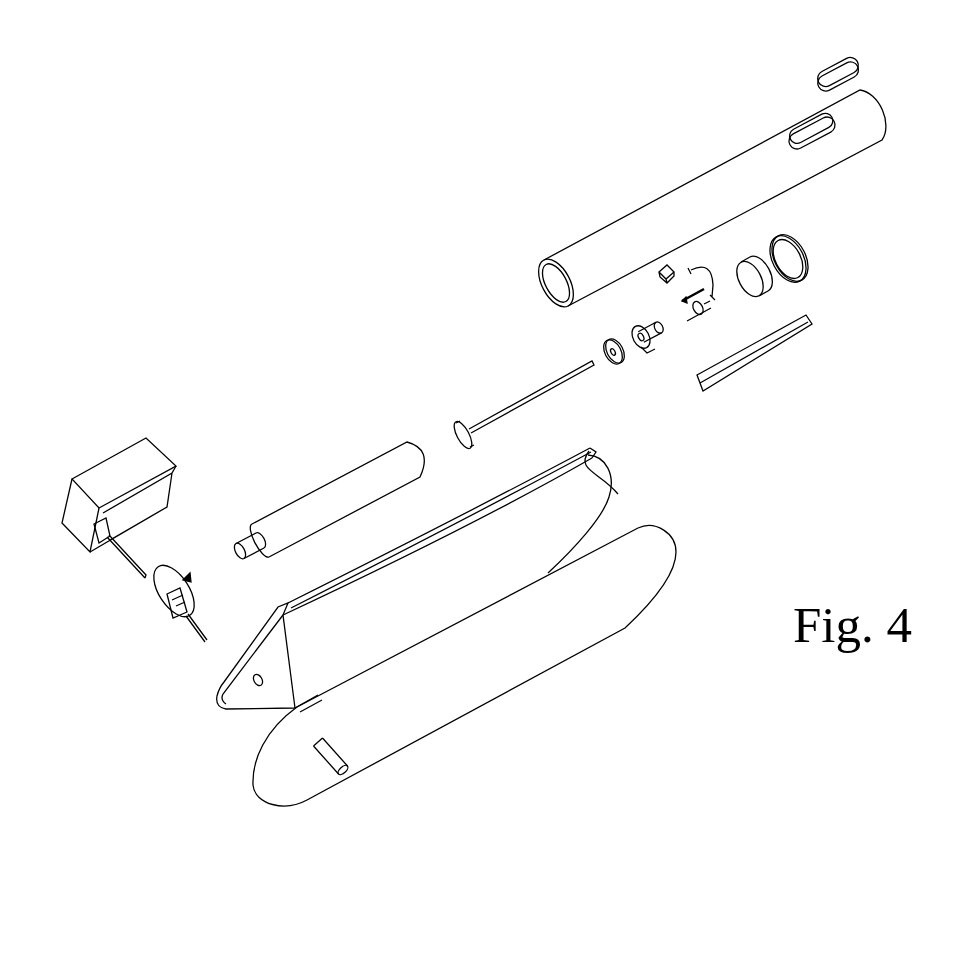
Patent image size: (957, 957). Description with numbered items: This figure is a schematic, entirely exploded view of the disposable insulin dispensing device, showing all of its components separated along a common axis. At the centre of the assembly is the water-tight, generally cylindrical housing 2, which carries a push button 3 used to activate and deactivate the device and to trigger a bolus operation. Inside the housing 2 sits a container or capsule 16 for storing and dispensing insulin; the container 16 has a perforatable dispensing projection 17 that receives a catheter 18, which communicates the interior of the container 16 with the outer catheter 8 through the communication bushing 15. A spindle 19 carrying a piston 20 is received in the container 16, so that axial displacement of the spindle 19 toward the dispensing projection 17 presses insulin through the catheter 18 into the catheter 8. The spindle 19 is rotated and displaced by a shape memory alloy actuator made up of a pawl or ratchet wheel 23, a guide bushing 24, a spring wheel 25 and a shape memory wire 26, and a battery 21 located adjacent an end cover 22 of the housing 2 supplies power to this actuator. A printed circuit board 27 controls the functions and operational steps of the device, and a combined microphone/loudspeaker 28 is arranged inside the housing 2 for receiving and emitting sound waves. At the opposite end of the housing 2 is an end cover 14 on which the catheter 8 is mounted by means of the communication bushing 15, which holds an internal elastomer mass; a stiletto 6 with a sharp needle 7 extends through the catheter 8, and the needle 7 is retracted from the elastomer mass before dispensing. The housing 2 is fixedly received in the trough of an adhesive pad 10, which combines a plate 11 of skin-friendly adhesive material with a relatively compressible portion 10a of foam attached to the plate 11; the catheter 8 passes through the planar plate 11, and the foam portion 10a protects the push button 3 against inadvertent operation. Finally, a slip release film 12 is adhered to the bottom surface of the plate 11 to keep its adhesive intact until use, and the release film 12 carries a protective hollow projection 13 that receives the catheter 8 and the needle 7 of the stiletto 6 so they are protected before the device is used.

The housing 2 is at (688, 200).
The push button 3 is at (830, 62).
The stiletto 6 is at (118, 470).
The needle 7 is at (122, 550).
The catheter 8 is at (197, 637).
The adhesive pad 10 is at (515, 538).
The compressible portion 10a is at (618, 494).
The plate 11 is at (240, 693).
The release film 12 is at (445, 700).
The protective hollow projection 13 is at (333, 773).
The end cover 14 is at (168, 575).
The communication bushing 15 is at (173, 610).
The container 16 is at (332, 498).
The dispensing projection 17 is at (255, 540).
The catheter 18 is at (191, 582).
The spindle 19 is at (500, 413).
The piston 20 is at (455, 433).
The battery 21 is at (755, 279).
The end cover 22 is at (808, 262).
The ratchet wheel 23 is at (603, 352).
The guide bushing 24 is at (641, 347).
The spring wheel 25 is at (707, 320).
The shape memory wire 26 is at (707, 263).
The printed circuit board 27 is at (780, 345).
The microphone/loudspeaker 28 is at (658, 268).